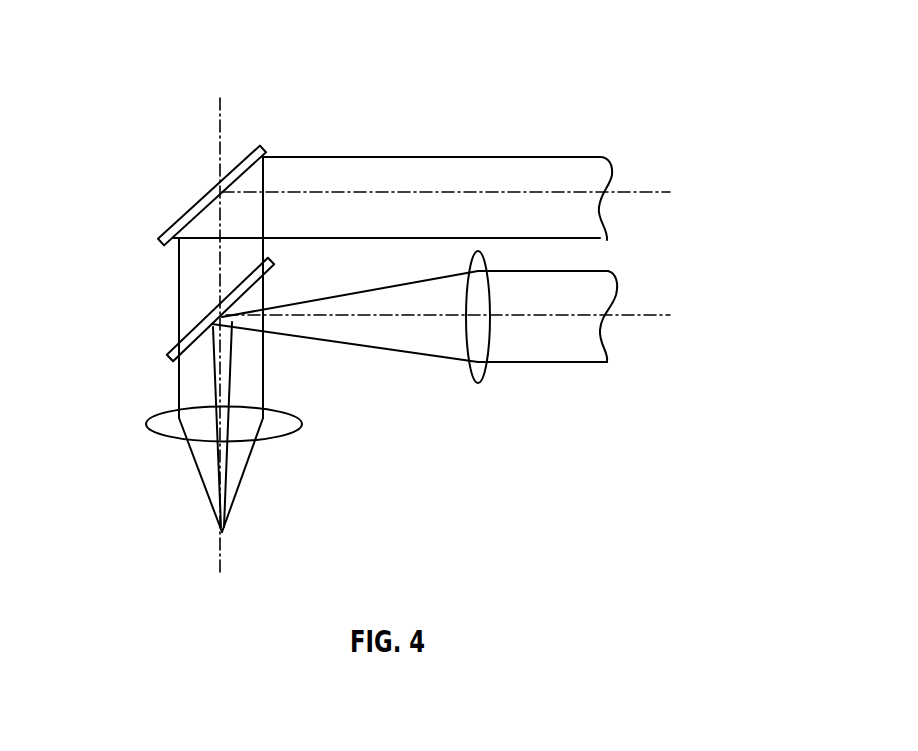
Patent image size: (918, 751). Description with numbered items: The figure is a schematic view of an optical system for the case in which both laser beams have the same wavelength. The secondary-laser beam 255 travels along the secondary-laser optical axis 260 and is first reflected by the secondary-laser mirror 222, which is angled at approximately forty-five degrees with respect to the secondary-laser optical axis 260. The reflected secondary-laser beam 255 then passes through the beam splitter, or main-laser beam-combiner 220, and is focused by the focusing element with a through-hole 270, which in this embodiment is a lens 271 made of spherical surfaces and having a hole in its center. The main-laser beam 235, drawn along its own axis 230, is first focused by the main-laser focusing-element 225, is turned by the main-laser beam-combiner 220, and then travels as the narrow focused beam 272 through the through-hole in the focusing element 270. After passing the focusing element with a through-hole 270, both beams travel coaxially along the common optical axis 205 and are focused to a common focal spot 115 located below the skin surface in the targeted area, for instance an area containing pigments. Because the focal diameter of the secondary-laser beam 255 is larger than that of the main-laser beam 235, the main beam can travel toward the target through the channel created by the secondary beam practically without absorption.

The common optical axis 205 is at (220, 100).
The secondary-laser mirror 222 is at (168, 232).
The main-laser beam-combiner 220 is at (170, 345).
The secondary-laser beam 255 is at (573, 157).
The secondary-laser optical axis 260 is at (643, 192).
The optical axis of second beam 230 is at (645, 318).
The main-laser beam 235 is at (540, 362).
The main-laser focusing-element 225 is at (475, 380).
The focusing element with a through-hole 270 is at (147, 423).
The lens made of spherical surfaces 271 is at (161, 409).
The focused beam 272 is at (228, 440).
The common focal spot 115 is at (220, 532).